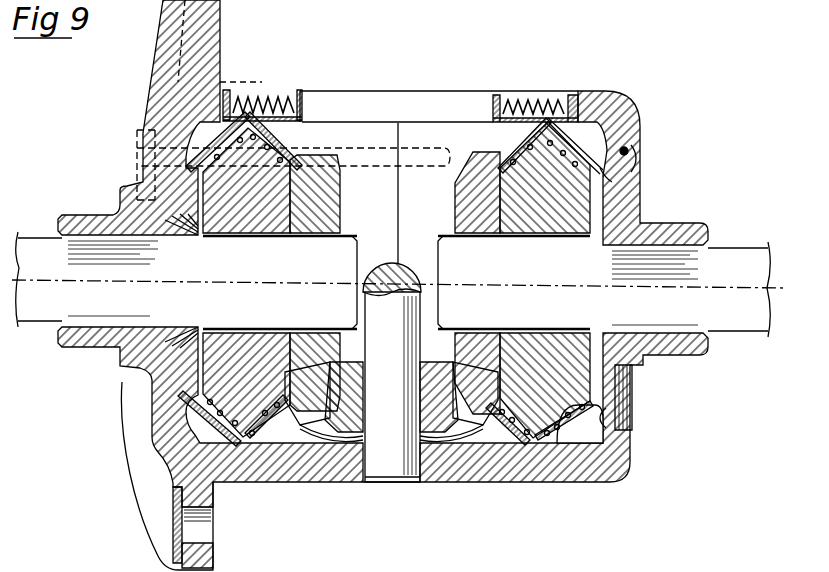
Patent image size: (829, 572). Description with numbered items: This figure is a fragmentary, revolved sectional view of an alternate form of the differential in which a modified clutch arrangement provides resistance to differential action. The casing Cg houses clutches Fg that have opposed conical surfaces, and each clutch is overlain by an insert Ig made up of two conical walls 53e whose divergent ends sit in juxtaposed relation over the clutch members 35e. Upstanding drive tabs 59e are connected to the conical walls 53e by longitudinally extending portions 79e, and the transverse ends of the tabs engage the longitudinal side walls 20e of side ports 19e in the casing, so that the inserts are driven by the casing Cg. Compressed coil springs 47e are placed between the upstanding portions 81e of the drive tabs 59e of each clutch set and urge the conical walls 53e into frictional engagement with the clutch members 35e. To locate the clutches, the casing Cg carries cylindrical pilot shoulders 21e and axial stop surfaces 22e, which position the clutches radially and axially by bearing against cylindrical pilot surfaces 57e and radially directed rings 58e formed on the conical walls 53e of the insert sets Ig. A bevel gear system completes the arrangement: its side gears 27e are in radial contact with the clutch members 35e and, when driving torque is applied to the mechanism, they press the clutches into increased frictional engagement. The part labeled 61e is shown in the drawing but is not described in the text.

The side port 19e is at (378, 58).
The longitudinal side wall 20e is at (411, 91).
The cylindrical pilot shoulder 21e is at (632, 381).
The axial stop surface 22e is at (607, 428).
The side gear 27e is at (493, 395).
The clutch member 35e is at (575, 208).
The compressed coil spring 47e is at (268, 90).
The conical wall 53e is at (608, 125).
The cylindrical pilot surface 57e is at (602, 173).
The radially directed ring 58e is at (612, 160).
The upstanding drive tab 59e is at (490, 98).
The hidden bolt 61e is at (150, 177).
The longitudinally extending portion 79e is at (198, 124).
The upstanding portion 81e is at (237, 90).
The clutch Fg is at (200, 423).
The insert Ig is at (190, 442).
The casing Cg is at (157, 513).